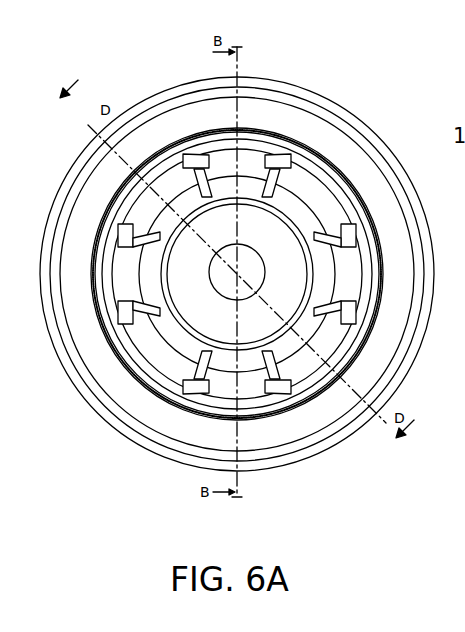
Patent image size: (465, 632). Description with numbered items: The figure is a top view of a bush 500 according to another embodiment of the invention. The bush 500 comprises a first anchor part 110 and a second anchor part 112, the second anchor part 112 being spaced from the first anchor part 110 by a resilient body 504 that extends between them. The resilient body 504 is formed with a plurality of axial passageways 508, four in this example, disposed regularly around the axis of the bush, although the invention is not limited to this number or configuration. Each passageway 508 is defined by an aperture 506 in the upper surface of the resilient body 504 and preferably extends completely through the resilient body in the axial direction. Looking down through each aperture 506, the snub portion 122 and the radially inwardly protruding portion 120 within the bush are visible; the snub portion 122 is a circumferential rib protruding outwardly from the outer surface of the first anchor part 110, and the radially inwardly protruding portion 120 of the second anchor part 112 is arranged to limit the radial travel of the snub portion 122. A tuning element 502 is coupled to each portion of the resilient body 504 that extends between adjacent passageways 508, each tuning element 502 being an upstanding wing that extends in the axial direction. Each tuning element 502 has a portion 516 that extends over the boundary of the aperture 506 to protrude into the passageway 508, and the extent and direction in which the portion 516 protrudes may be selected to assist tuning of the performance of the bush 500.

The bush 500 is at (128, 55).
The first anchor part 110 is at (192, 247).
The second anchor part 112 is at (330, 438).
The radially inwardly protruding portion 120 is at (104, 290).
The snub portion 122 is at (145, 270).
The tuning element 502 is at (177, 377).
The resilient body 504 is at (163, 377).
The aperture 506 is at (123, 328).
The axial passageway 508 is at (123, 278).
The portion 516 is at (197, 384).